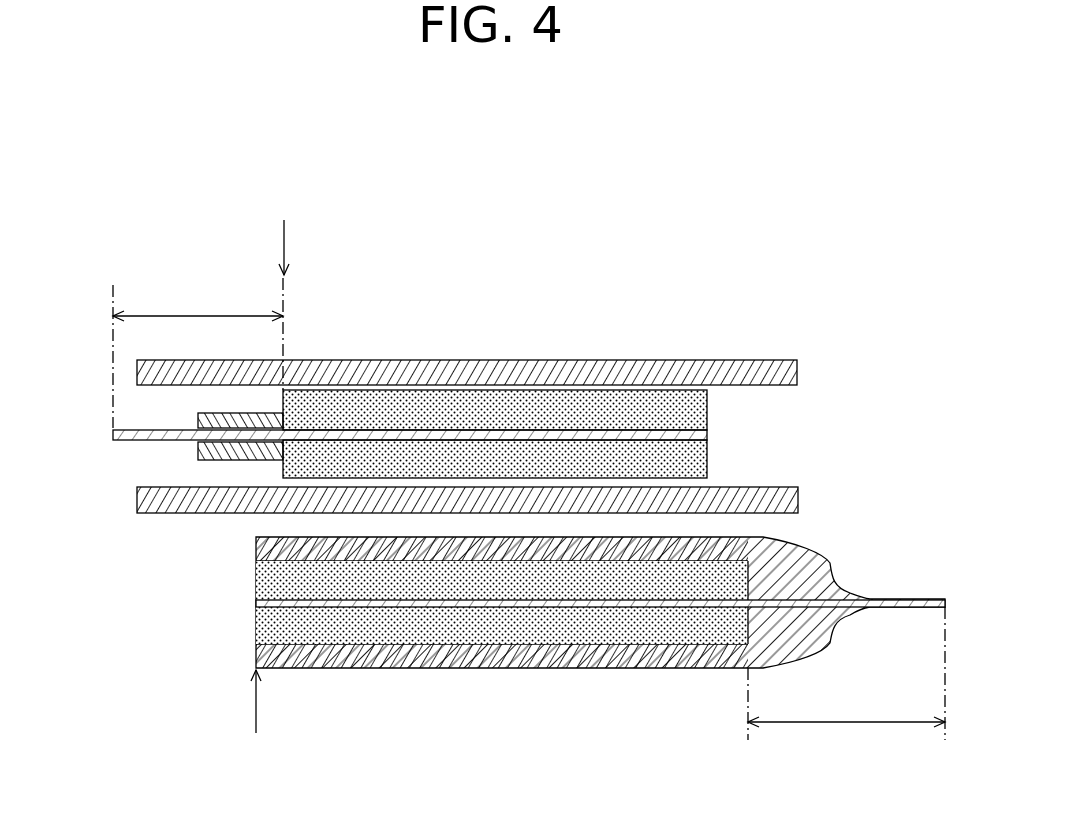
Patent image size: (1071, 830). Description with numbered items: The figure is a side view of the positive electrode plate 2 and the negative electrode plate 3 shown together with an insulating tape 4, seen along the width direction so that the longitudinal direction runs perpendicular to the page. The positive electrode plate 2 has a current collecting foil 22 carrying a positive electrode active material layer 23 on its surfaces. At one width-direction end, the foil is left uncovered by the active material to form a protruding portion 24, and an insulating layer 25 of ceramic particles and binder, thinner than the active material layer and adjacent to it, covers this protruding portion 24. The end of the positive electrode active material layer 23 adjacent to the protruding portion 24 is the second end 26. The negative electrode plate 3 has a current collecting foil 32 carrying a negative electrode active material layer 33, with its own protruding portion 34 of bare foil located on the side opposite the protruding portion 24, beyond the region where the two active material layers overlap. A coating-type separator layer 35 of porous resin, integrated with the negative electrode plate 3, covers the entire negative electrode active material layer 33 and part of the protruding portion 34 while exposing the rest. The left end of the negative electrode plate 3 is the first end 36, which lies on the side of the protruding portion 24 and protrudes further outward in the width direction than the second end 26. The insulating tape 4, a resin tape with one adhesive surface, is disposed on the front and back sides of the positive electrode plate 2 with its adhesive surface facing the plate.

The positive electrode plate 2 is at (410, 343).
The current collecting foil 22 is at (584, 428).
The positive electrode active material layer 23 is at (489, 463).
The protruding portion 24 is at (198, 353).
The insulating layer 25 is at (200, 455).
The second end 26 is at (270, 215).
The insulating tape 4 is at (783, 497).
The negative electrode plate 3 is at (600, 669).
The current collecting foil 32 is at (468, 602).
The negative electrode active material layer 33 is at (595, 578).
The protruding portion 34 is at (846, 673).
The separator layer 35 is at (363, 538).
The first end 36 is at (242, 772).